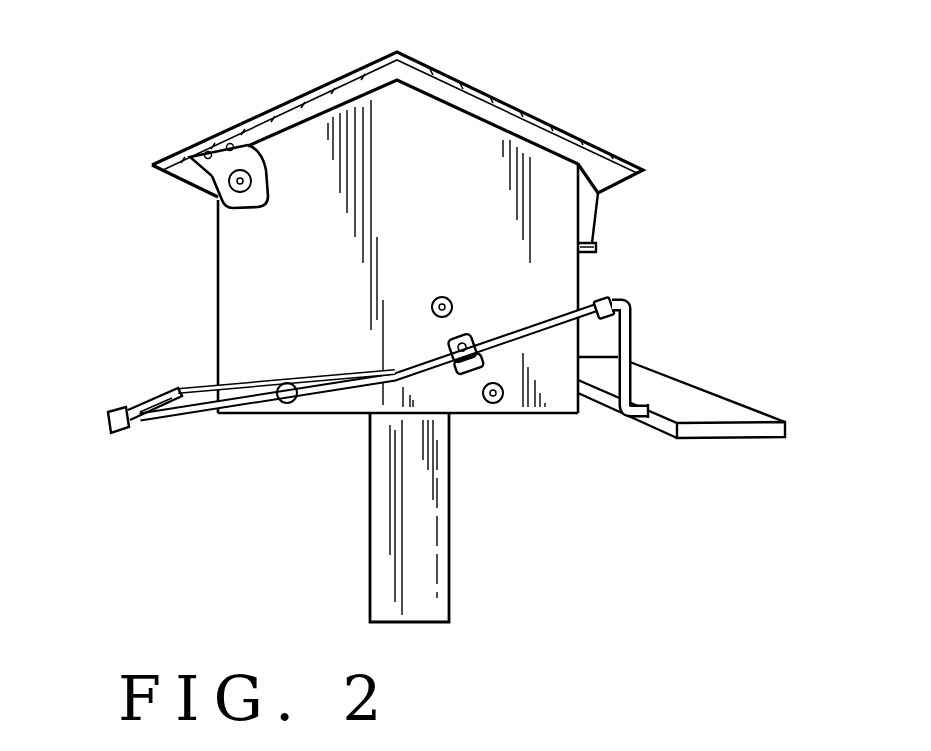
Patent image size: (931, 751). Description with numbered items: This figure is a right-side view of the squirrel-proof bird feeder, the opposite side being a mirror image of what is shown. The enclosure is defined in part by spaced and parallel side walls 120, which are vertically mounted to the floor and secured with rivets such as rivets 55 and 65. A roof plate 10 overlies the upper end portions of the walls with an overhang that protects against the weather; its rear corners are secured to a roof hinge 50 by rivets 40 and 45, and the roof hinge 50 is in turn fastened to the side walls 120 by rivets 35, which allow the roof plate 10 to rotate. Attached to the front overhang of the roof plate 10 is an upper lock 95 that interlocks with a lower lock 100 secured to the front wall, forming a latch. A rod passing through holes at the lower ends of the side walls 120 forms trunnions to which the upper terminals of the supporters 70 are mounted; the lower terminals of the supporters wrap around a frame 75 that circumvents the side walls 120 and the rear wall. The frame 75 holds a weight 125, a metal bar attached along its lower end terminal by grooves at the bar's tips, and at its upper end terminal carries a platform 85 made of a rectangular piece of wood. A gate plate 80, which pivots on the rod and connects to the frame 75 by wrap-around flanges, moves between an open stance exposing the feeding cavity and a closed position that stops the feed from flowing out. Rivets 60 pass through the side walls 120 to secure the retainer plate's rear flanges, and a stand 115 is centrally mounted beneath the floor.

The roof plate 10 is at (367, 63).
The rivets 35 is at (243, 187).
The rivet 40 is at (231, 142).
The rivet 45 is at (203, 147).
The roof hinge 50 is at (223, 173).
The rivet 55 is at (285, 372).
The rivets 60 is at (447, 293).
The rivet 65 is at (500, 403).
The supporters 70 is at (473, 333).
The frame 75 is at (190, 420).
The gate plate 80 is at (662, 355).
The platform 85 is at (715, 412).
The upper lock 95 is at (590, 208).
The lower lock 100 is at (600, 247).
The stand 115 is at (418, 555).
The side walls 120 is at (468, 147).
The weight 125 is at (125, 402).